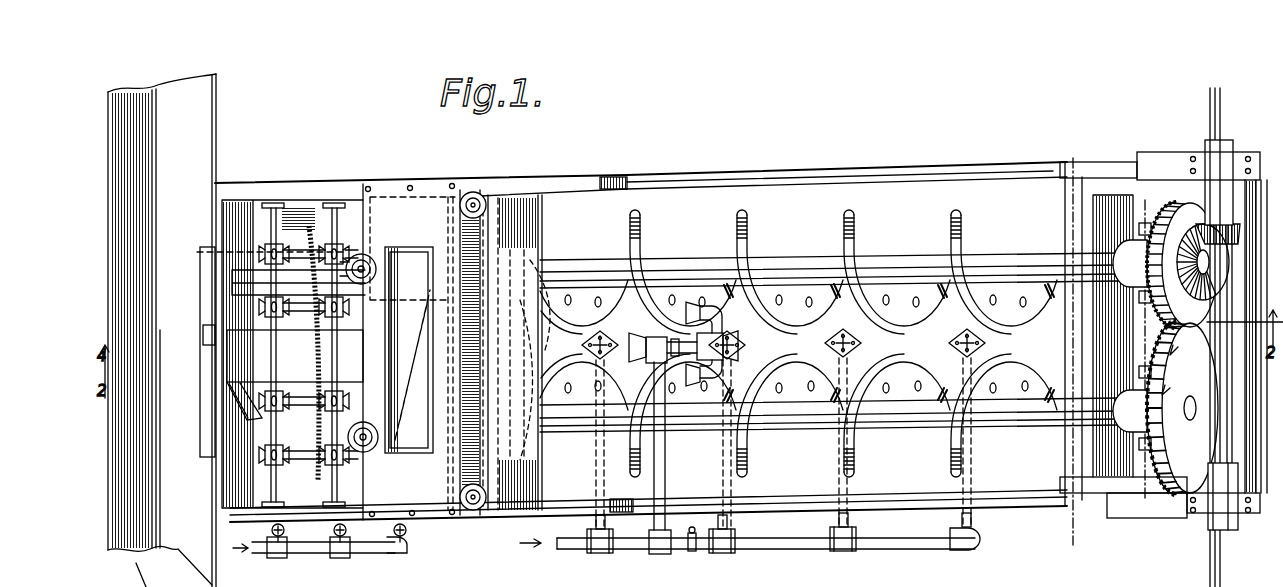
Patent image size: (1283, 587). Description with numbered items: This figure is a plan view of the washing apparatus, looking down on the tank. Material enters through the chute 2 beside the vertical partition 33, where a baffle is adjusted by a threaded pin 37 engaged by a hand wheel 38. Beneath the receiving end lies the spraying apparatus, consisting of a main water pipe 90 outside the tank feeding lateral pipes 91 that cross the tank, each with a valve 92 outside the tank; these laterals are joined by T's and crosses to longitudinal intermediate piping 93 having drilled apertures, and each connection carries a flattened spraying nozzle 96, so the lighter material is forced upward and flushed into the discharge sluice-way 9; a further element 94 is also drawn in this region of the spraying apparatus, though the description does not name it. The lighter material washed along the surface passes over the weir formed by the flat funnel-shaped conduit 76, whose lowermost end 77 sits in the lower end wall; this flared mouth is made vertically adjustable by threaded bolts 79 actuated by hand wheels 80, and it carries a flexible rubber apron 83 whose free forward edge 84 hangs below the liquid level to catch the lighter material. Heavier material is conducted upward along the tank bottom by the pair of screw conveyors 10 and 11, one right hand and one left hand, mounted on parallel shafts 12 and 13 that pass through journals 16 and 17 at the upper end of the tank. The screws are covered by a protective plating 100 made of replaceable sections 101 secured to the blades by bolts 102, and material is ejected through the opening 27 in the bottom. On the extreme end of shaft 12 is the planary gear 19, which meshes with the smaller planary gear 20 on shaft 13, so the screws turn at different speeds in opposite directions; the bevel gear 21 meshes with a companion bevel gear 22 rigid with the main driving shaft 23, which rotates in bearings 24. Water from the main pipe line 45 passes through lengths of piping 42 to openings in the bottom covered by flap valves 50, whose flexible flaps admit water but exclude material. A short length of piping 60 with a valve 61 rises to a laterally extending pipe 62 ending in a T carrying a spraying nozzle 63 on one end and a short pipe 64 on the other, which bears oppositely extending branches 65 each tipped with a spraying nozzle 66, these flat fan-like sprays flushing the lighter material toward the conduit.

The discharge trough or sluice-way 9 is at (172, 200).
The chute 2 is at (403, 242).
The partition 33 is at (446, 222).
The spraying nozzle 96 is at (252, 248).
The intermediate piping 93 is at (296, 246).
The feed chute 94 is at (310, 228).
The hand wheel 38 is at (363, 254).
The threaded pin 37 is at (368, 443).
The adjustable conduit 76 is at (296, 345).
The lowermost end of conduit 77 is at (200, 345).
The lateral pipes 91 is at (340, 488).
The valve 92 is at (285, 530).
The main water pipe 90 is at (317, 555).
The threaded bolts 79 is at (463, 520).
The hand wheels 80 is at (478, 193).
The flexible apron 83 is at (541, 203).
The free forward edge of apron 84 is at (541, 228).
The shaft 13 is at (897, 258).
The screw conveyor 11 is at (1035, 312).
The shaft 12 is at (906, 430).
The screw conveyor 10 is at (1027, 358).
The plating sections 101 is at (918, 368).
The bolts 102 is at (897, 380).
The protective plating 100 is at (865, 470).
The flap valve 50 is at (584, 347).
The laterally extending pipe 62 is at (655, 337).
The spraying nozzle 63 is at (629, 334).
The short length of pipe 64 is at (715, 334).
The branches 65 is at (720, 302).
The spraying nozzle 66 is at (688, 300).
The length of piping 42 is at (596, 523).
The main water pipe line 45 is at (573, 551).
The short length of piping 60 is at (679, 552).
The valve 61 is at (690, 553).
The journal 17 is at (1093, 248).
The journal 16 is at (1127, 392).
The planary gear 20 is at (1160, 322).
The planary gear 19 is at (1175, 357).
The bevel gear 21 is at (1193, 230).
The companion bevel gear 22 is at (1227, 170).
The main driving shaft 23 is at (1212, 114).
The bearings 24 is at (1212, 148).
The opening 27 is at (1097, 470).